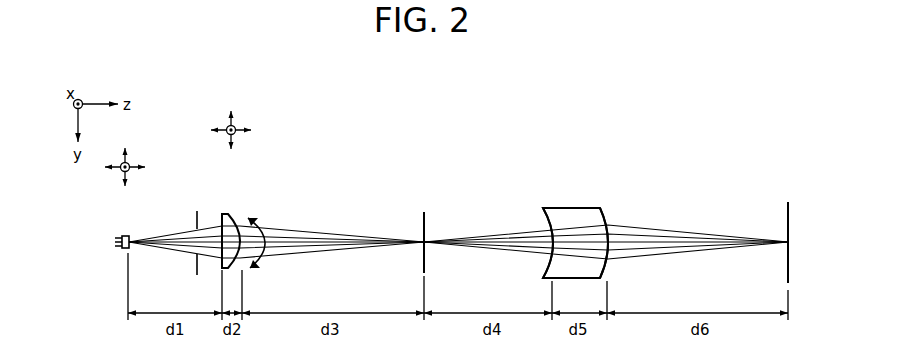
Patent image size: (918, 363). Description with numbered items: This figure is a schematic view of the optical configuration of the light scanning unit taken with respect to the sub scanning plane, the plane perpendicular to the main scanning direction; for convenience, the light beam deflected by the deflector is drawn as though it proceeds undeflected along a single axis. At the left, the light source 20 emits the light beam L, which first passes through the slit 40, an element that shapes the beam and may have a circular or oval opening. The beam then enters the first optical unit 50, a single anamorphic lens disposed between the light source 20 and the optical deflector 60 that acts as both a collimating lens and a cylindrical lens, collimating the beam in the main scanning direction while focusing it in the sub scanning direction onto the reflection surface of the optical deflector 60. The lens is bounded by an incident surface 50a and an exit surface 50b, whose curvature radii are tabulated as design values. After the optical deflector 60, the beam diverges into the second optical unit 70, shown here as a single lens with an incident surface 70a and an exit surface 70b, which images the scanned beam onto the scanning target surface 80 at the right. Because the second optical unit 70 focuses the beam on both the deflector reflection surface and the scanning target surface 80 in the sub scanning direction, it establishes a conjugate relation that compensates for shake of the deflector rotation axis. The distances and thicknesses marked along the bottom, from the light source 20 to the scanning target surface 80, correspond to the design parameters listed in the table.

The light source 20 is at (128, 233).
The slit 40 is at (196, 216).
The first optical unit 50 is at (229, 212).
The incident surface 50a is at (222, 214).
The exit surface 50b is at (249, 216).
The optical deflector 60 is at (423, 214).
The second optical unit 70 is at (569, 204).
The incident surface 70a is at (545, 225).
The exit surface 70b is at (604, 215).
The scanning target surface 80 is at (787, 212).